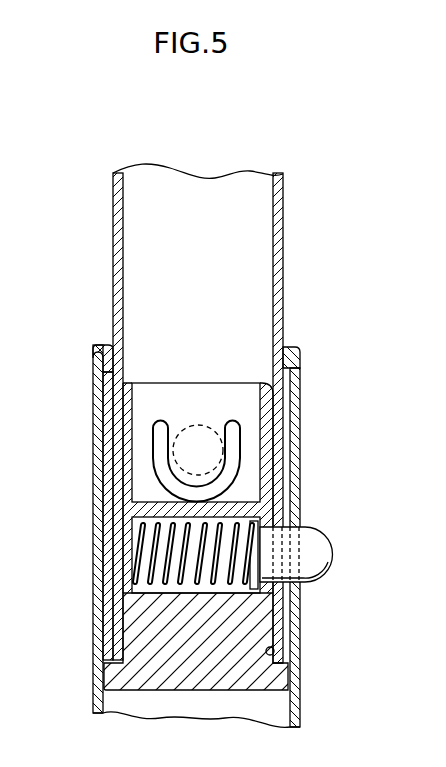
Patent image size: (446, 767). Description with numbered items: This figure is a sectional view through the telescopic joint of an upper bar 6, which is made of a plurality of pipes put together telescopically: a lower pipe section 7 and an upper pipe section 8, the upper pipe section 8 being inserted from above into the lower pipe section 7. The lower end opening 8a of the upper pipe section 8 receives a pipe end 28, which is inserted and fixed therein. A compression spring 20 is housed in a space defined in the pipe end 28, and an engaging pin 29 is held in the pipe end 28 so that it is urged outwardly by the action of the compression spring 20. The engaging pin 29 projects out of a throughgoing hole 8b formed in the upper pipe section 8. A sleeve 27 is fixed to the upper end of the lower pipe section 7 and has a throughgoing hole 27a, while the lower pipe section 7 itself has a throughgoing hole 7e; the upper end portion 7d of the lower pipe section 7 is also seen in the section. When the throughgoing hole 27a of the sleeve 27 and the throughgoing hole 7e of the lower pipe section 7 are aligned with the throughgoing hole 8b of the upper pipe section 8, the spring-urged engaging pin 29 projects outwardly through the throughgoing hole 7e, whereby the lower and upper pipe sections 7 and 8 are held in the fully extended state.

The upper bar 6 is at (303, 401).
The lower pipe section 7 is at (300, 721).
The upper end portion of lower tube 7d is at (101, 362).
The throughgoing hole 7e is at (300, 576).
The upper pipe section 8 is at (280, 257).
The lower end opening 8a is at (284, 654).
The throughgoing hole 8b is at (284, 604).
The compression spring 20 is at (135, 552).
The sleeve 27 is at (291, 348).
The throughgoing hole 27a is at (291, 600).
The pipe end 28 is at (135, 638).
The engaging pin 29 is at (317, 546).